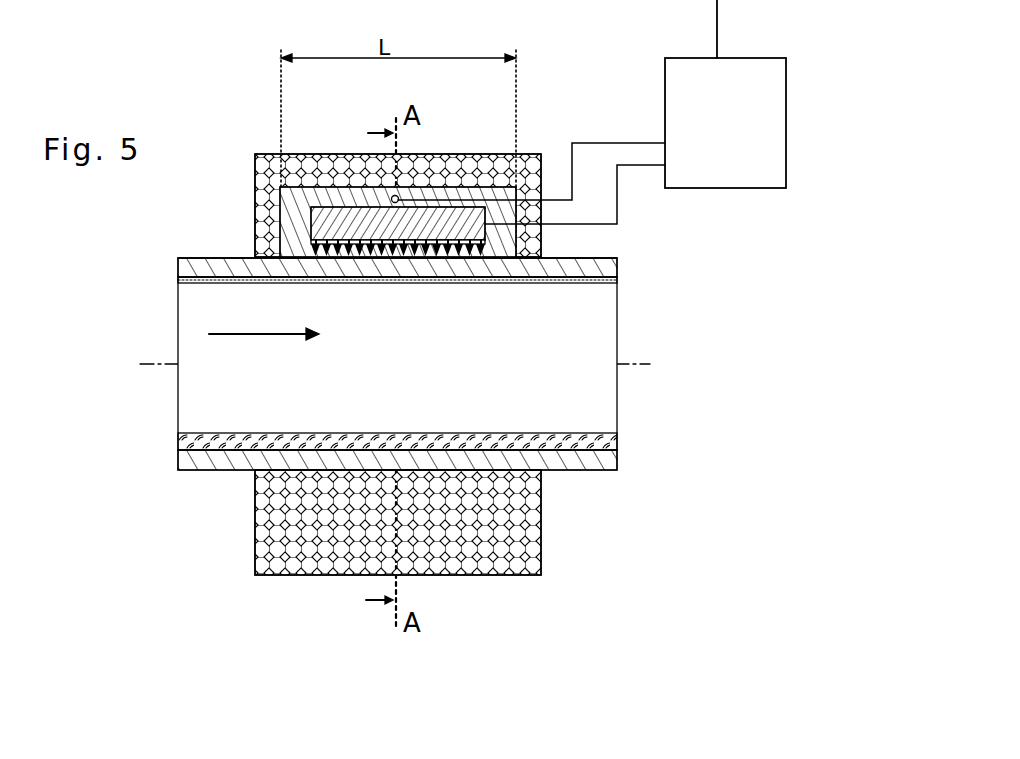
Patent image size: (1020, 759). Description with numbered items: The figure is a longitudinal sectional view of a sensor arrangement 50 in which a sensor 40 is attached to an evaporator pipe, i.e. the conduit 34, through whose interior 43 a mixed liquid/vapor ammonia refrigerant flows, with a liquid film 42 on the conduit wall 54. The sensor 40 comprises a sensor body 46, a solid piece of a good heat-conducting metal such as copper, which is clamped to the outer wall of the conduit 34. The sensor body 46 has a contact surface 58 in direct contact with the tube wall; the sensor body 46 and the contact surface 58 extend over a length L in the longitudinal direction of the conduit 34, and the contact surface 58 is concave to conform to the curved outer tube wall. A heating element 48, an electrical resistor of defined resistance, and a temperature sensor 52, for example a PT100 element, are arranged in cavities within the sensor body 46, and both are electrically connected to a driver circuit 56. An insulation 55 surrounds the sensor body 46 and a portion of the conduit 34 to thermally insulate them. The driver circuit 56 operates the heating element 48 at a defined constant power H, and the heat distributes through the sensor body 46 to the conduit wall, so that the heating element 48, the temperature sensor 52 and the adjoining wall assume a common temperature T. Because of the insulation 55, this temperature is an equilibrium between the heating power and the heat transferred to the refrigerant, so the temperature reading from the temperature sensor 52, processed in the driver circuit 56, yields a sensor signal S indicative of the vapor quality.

The conduit 34 is at (178, 262).
The sensor 40 is at (437, 162).
The liquid film 42 is at (180, 285).
The interior 43 is at (468, 346).
The sensor body 46 is at (295, 205).
The heating element 48 is at (337, 213).
The sensor arrangement 50 is at (110, 528).
The temperature sensor 52 is at (392, 197).
The pipe wall 54 is at (397, 129).
The insulation 55 is at (525, 502).
The driver circuit 56 is at (735, 134).
The contact surface 58 is at (413, 258).